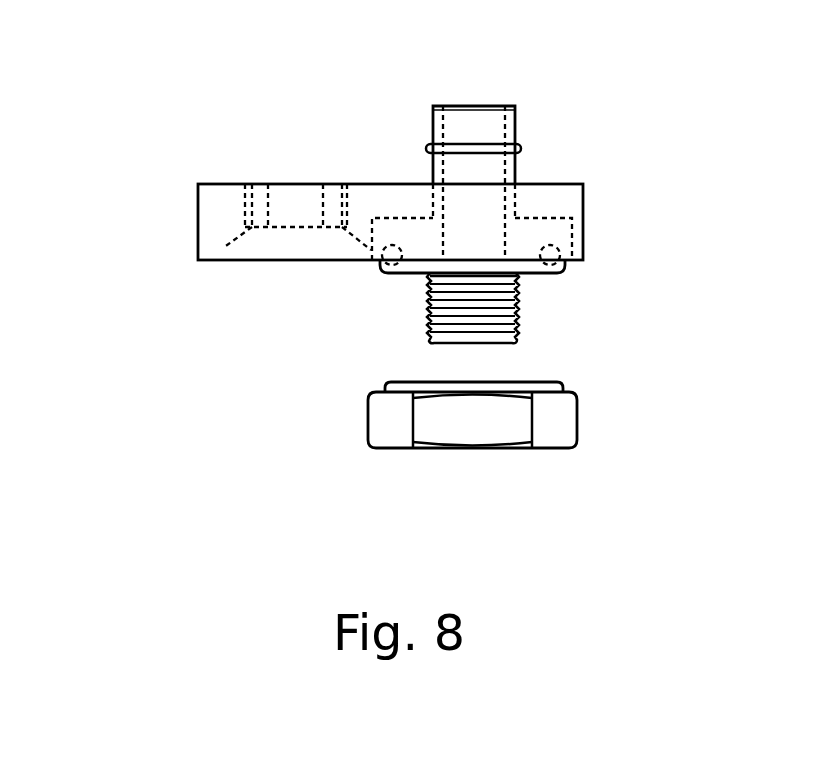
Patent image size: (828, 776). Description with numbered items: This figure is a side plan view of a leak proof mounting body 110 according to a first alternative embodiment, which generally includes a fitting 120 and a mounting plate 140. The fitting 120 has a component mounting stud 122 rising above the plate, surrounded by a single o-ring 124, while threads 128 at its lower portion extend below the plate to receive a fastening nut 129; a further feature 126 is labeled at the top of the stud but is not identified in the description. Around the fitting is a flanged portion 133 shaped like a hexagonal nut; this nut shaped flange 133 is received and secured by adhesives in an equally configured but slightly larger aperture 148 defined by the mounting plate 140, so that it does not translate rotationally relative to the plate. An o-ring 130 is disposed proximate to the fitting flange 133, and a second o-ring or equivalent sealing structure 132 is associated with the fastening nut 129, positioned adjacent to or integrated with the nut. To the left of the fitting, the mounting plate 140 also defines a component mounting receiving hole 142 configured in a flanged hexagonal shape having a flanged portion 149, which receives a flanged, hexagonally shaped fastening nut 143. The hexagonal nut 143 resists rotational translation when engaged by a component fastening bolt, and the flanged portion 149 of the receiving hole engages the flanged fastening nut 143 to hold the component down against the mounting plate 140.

The mounting body 110 is at (288, 128).
The fitting 120 is at (432, 108).
The component mounting stud 122 is at (515, 121).
The o-ring 124 is at (521, 149).
The head top 126 is at (478, 113).
The threads 128 is at (520, 318).
The fastening nut 129 is at (567, 420).
The o-ring 130 is at (548, 268).
The second o-ring 132 is at (405, 388).
The flanged portion 133 is at (555, 218).
The mounting plate 140 is at (198, 210).
The component mounting receiving hole 142 is at (248, 184).
The fastening nut 143 is at (257, 184).
The aperture 148 is at (563, 262).
The flanged portion 149 is at (225, 250).